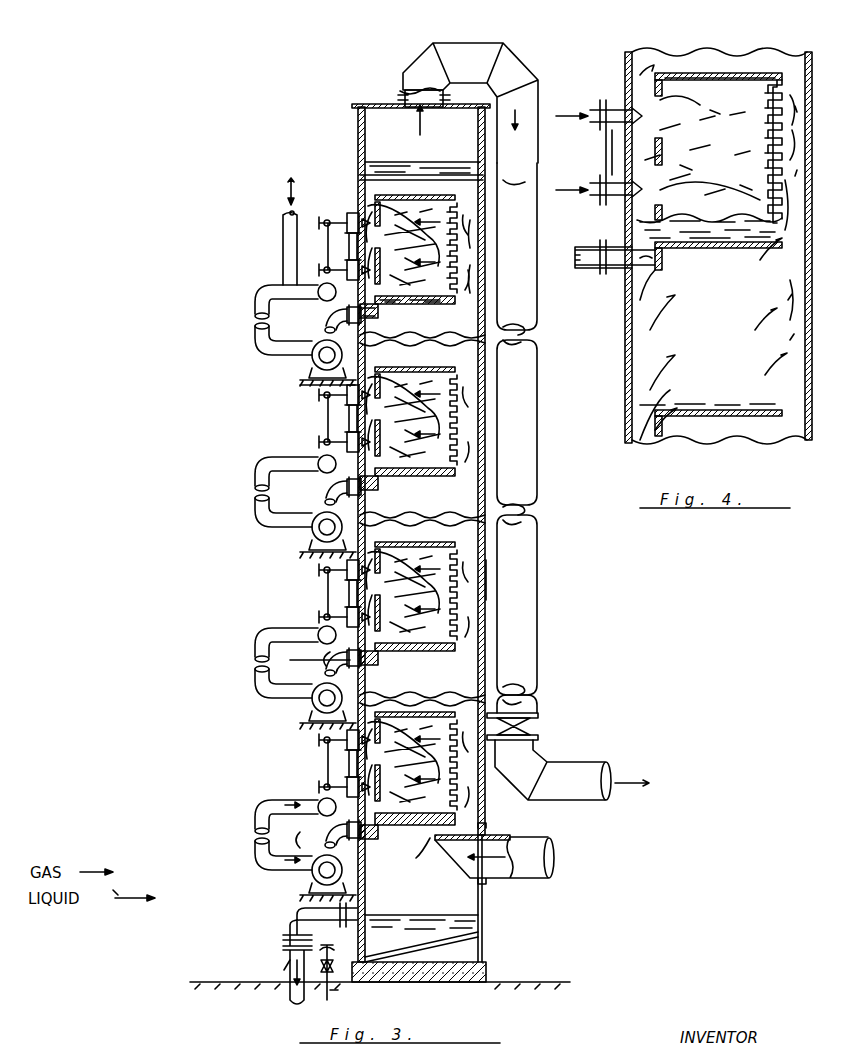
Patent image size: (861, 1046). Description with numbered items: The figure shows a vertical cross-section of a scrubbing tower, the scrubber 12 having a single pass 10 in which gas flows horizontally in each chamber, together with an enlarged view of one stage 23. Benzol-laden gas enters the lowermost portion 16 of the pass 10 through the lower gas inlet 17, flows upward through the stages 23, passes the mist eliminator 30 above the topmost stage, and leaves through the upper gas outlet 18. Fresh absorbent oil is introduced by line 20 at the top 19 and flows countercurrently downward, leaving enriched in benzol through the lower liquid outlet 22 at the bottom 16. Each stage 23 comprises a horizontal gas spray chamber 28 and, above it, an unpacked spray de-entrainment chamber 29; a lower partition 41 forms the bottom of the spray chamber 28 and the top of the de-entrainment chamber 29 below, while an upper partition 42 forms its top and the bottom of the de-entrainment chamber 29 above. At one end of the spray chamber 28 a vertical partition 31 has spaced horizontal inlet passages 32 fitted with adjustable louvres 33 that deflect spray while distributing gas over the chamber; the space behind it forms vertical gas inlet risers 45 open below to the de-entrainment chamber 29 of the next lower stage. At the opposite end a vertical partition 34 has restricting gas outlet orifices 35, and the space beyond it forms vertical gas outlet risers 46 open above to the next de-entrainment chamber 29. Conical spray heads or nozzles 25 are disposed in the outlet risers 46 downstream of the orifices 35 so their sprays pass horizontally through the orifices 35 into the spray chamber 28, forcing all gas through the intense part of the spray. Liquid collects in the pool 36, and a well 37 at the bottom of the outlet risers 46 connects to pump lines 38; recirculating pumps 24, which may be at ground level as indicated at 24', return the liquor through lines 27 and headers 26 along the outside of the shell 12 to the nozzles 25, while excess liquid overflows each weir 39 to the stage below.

In FIG. 3, the single pass 10 is at (360, 573).
In FIG. 3, the scrubber shell 12 is at (495, 574).
In FIG. 4, the scrubber shell 12 is at (625, 383).
In FIG. 3, the lowermost portion 16 is at (400, 888).
In FIG. 3, the lower gas inlet 17 is at (546, 878).
In FIG. 3, the upper gas outlet 18 is at (478, 50).
In FIG. 3, the top of the pass 19 is at (374, 127).
In FIG. 3, the fresh absorbent feed line 20 is at (283, 228).
In FIG. 3, the lower liquid outlet 22 is at (292, 995).
In FIG. 3, the stage 23 is at (497, 358).
In FIG. 4, the stage 23 is at (615, 97).
In FIG. 3, the recirculating pump 24 is at (309, 530).
In FIG. 3, the ground-level pump location 24' is at (242, 869).
In FIG. 3, the conical spray heads or nozzles 25 is at (505, 710).
In FIG. 4, the conical spray heads or nozzles 25 is at (625, 184).
In FIG. 3, the header 26 is at (314, 287).
In FIG. 3, the pump line 27 is at (266, 297).
In FIG. 3, the gas spray chamber 28 is at (454, 250).
In FIG. 4, the gas spray chamber 28 is at (710, 148).
In FIG. 3, the spray de-entrainment chamber 29 is at (485, 186).
In FIG. 4, the spray de-entrainment chamber 29 is at (627, 60).
In FIG. 3, the mist eliminator 30 is at (460, 168).
In FIG. 3, the vertical inlet partition 31 is at (455, 262).
In FIG. 4, the vertical inlet partition 31 is at (775, 85).
In FIG. 3, the horizontal inlet passage 32 is at (455, 282).
In FIG. 4, the horizontal inlet passage 32 is at (768, 118).
In FIG. 3, the adjustable louvre 33 is at (457, 422).
In FIG. 4, the adjustable louvre 33 is at (770, 205).
In FIG. 3, the vertical outlet partition 34 is at (372, 580).
In FIG. 4, the vertical outlet partition 34 is at (680, 73).
In FIG. 3, the gas outlet orifice 35 is at (377, 601).
In FIG. 4, the gas outlet orifice 35 is at (660, 100).
In FIG. 3, the pool 36 is at (436, 300).
In FIG. 4, the pool 36 is at (680, 248).
In FIG. 3, the well 37 is at (373, 660).
In FIG. 4, the well 37 is at (625, 276).
In FIG. 3, the pump line 38 is at (330, 668).
In FIG. 4, the pump line 38 is at (592, 270).
In FIG. 3, the weir 39 is at (460, 476).
In FIG. 4, the weir 39 is at (772, 236).
In FIG. 3, the lower partition 41 is at (410, 402).
In FIG. 4, the lower partition 41 is at (702, 240).
In FIG. 3, the upper partition 42 is at (415, 456).
In FIG. 4, the upper partition 42 is at (720, 242).
In FIG. 3, the vertical gas inlet riser 45 is at (463, 467).
In FIG. 4, the vertical gas inlet riser 45 is at (780, 172).
In FIG. 3, the vertical gas outlet riser 46 is at (337, 388).
In FIG. 4, the vertical gas outlet riser 46 is at (640, 462).